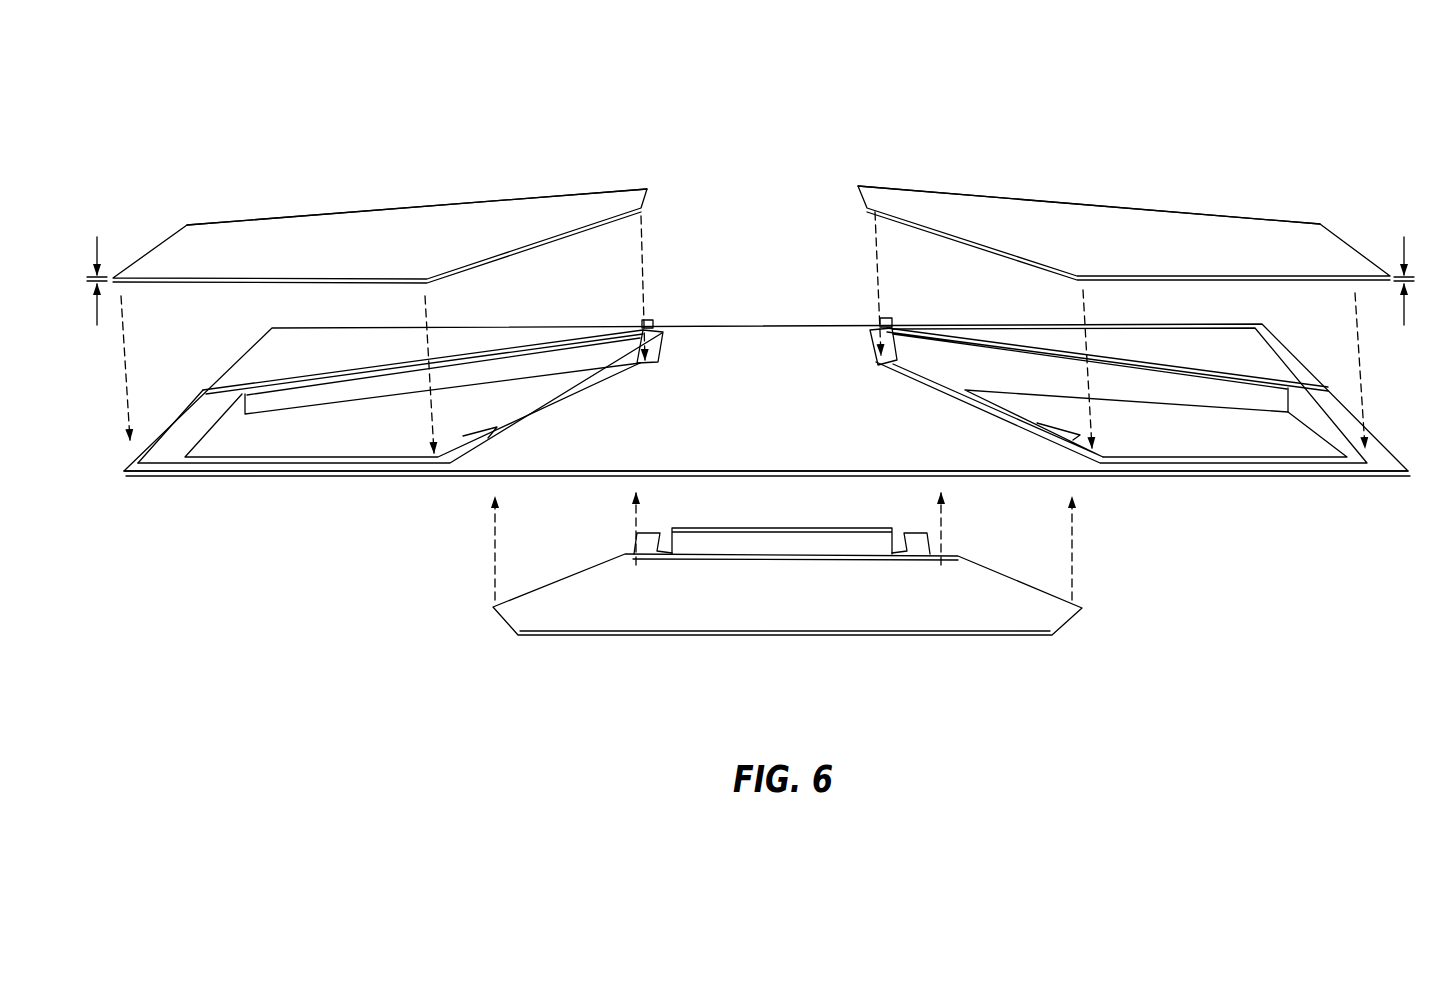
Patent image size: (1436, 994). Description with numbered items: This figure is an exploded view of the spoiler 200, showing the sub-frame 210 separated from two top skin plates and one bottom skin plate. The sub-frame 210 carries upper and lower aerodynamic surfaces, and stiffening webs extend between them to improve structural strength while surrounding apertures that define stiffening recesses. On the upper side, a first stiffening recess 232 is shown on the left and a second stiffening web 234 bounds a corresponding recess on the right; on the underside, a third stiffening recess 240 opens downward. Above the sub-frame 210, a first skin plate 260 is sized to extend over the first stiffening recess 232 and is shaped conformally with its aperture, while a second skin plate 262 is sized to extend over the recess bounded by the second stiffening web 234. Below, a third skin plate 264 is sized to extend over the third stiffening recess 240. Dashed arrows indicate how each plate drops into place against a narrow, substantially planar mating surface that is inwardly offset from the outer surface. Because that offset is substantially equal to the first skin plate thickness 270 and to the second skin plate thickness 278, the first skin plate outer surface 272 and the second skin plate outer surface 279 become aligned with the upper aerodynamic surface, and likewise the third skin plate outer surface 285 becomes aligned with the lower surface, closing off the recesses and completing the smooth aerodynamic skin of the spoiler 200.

The spoiler 200 is at (1013, 140).
The sub-frame 210 is at (768, 328).
The first stiffening recess 232 is at (303, 446).
The second stiffening web 234 is at (1236, 447).
The third stiffening recess 240 is at (795, 455).
The first skin plate 260 is at (319, 206).
The second skin plate 262 is at (1183, 208).
The third skin plate 264 is at (789, 642).
The first skin plate thickness 270 is at (99, 267).
The first skin plate outer surface 272 is at (428, 227).
The second skin plate thickness 278 is at (1405, 267).
The second skin plate outer surface 279 is at (1090, 216).
The third skin plate outer surface 285 is at (697, 615).